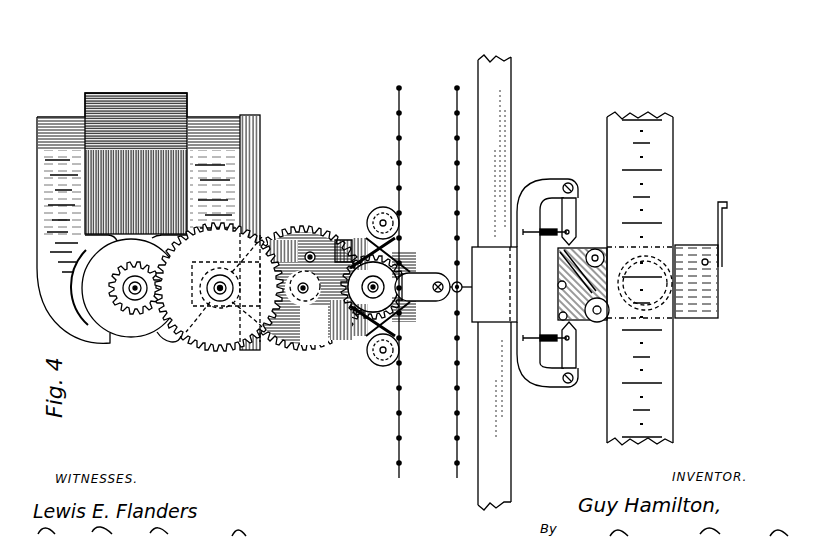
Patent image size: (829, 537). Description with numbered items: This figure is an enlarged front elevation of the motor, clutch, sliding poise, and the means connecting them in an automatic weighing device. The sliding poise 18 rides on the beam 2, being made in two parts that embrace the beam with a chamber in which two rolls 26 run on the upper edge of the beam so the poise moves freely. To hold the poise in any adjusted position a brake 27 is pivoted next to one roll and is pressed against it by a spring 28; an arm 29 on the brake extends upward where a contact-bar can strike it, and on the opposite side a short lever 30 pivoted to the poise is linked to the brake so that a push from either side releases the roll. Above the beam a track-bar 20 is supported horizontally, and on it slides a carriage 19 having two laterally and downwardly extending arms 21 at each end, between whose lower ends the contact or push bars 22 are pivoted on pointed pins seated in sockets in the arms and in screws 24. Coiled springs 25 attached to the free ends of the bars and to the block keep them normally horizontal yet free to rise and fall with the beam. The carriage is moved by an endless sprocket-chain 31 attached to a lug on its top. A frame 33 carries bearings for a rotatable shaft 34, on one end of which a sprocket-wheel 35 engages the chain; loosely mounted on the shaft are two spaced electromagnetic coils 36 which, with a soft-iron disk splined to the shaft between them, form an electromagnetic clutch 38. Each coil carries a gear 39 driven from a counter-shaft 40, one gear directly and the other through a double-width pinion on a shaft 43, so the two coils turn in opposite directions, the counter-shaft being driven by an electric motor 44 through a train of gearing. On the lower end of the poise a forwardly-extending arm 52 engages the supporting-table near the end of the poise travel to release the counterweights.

The beam 2 is at (640, 440).
The sliding poise 18 is at (718, 287).
The carriage 19 is at (494, 284).
The track-bar 20 is at (488, 505).
The arms 21 is at (534, 386).
The contact or push bars 22 is at (577, 372).
The screws 24 is at (568, 387).
The coiled springs 25 is at (548, 342).
The rolls 26 is at (598, 323).
The brake 27 is at (588, 320).
The spring 28 is at (558, 285).
The arm 29 is at (559, 318).
The short lever 30 is at (576, 252).
The endless sprocket-chain 31 is at (456, 438).
The frame 33 is at (335, 346).
The rotatable shaft 34 is at (412, 270).
The sprocket-wheel 35 is at (433, 302).
The electromagnetic coils 36 is at (400, 254).
The electromagnetic clutch 38 is at (405, 318).
The gear 39 is at (348, 242).
The counter-shaft 40 is at (300, 312).
The shaft 43 is at (305, 248).
The electric motor 44 is at (128, 328).
The forwardly-extending arm 52 is at (718, 216).